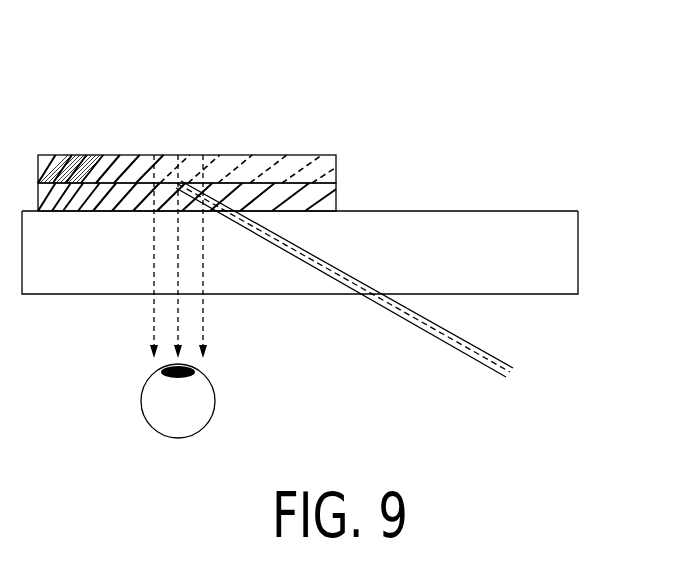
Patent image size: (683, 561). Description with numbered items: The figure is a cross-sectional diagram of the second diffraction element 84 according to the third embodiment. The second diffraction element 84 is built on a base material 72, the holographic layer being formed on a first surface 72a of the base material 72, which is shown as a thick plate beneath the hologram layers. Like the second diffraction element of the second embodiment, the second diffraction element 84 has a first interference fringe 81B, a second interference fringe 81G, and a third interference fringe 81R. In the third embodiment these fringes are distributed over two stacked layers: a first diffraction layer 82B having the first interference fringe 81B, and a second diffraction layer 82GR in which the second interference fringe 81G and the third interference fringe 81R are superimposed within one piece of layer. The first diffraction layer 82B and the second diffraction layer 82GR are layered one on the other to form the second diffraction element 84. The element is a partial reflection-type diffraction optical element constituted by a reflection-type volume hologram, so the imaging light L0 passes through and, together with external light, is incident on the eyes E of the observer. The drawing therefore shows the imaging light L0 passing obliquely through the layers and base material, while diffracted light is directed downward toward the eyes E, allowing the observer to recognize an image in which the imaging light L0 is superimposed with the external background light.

The second diffraction element 84 is at (245, 112).
The first interference fringe 81B is at (83, 155).
The second interference fringe 81G is at (213, 155).
The third interference fringe 81R is at (267, 155).
The second diffraction layer 82GR is at (325, 173).
The first diffraction layer 82B is at (323, 202).
The base material 72 is at (578, 262).
The first surface 72a is at (518, 211).
The imaging light L0 is at (463, 376).
The eyes E is at (141, 402).